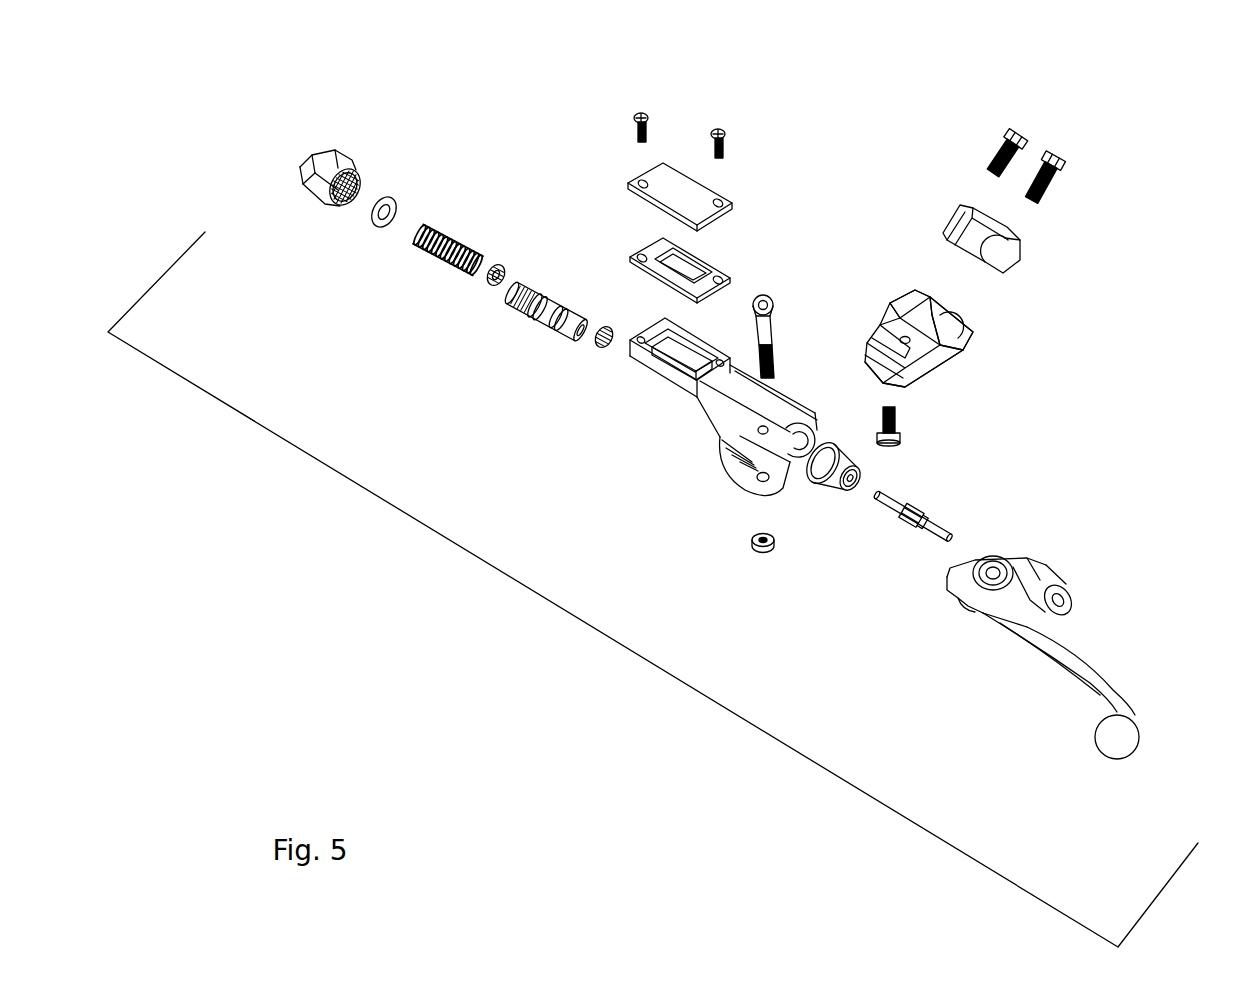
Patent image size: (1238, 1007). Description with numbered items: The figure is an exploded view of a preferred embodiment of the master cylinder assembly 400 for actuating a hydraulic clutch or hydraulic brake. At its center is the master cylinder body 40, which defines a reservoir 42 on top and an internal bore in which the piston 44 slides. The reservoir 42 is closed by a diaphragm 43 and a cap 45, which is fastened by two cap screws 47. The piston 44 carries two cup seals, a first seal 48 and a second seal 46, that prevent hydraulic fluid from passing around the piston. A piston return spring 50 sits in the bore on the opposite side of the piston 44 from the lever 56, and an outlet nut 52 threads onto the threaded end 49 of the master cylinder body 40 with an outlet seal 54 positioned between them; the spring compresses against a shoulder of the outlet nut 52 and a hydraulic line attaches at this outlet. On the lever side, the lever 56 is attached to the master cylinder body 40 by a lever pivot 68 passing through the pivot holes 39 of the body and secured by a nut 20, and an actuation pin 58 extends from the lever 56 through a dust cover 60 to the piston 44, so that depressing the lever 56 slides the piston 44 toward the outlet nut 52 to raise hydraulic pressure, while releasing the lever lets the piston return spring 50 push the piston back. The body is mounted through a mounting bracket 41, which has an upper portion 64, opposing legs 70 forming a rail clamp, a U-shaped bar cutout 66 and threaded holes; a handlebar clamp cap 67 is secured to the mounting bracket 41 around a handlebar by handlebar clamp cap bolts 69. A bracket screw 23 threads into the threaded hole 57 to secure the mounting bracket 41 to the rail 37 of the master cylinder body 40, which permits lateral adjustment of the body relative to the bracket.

The master cylinder assembly 400 is at (662, 672).
The outlet nut 52 is at (315, 198).
The outlet seal 54 is at (371, 224).
The piston return spring 50 is at (426, 267).
The second seal 46 is at (489, 282).
The piston 44 is at (540, 306).
The first seal 48 is at (595, 350).
The cap 45 is at (641, 179).
The cap screws 47 is at (645, 112).
The diaphragm 43 is at (641, 251).
The lever pivot 68 is at (752, 346).
The threaded end 49 is at (630, 360).
The reservoir 42 is at (672, 354).
The master cylinder body 40 is at (679, 393).
The rail 37 is at (813, 427).
The pivot holes 39 is at (762, 434).
The nut 20 is at (758, 548).
The dust cover 60 is at (833, 488).
The actuation pin 58 is at (888, 505).
The bracket screw 23 is at (898, 438).
The mounting bracket 41 is at (942, 348).
The threaded hole 57 is at (893, 341).
The clamp upper portion 64 is at (900, 292).
The U-shaped bar cutout 66 is at (933, 292).
The opposing legs 70 is at (905, 382).
The handlebar clamp cap 67 is at (1014, 259).
The handlebar clamp cap bolts 69 is at (1055, 160).
The lever 56 is at (960, 600).